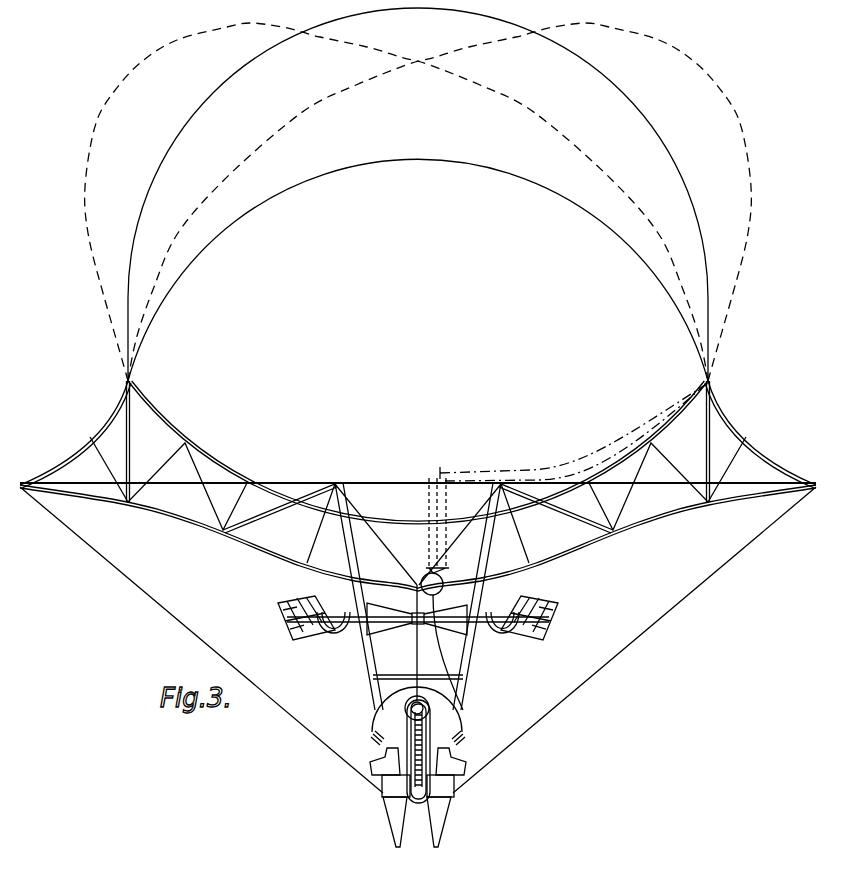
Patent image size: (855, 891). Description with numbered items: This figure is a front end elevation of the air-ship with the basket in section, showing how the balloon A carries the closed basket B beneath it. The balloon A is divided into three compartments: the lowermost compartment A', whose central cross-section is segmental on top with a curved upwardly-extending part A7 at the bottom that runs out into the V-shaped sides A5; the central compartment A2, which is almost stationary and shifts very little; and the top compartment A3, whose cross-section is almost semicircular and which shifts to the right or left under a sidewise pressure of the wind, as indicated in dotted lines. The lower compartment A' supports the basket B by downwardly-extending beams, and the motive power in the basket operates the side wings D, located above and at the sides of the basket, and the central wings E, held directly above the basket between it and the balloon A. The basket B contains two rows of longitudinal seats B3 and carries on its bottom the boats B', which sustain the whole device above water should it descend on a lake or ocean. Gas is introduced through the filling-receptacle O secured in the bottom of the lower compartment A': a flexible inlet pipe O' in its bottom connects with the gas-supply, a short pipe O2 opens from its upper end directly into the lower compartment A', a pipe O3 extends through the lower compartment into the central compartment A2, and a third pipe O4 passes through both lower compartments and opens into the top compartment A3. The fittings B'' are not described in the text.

The balloon A is at (439, 194).
The central compartment A2 is at (418, 272).
The top compartment A3 is at (418, 202).
The sides of lower compartment A5 is at (73, 461).
The curved upwardly-extending part A7 is at (118, 503).
The lower compartment A' is at (418, 587).
The filling-receptacle O is at (447, 577).
The flexible inlet pipe O' is at (448, 652).
The short pipe O2 is at (418, 568).
The pipe to central compartment O3 is at (425, 500).
The pipe to top compartment O4 is at (582, 461).
The central wings E is at (416, 615).
The side wings D is at (293, 617).
The basket B is at (412, 728).
The boats B' is at (415, 816).
The cylinder fittings B'' is at (424, 737).
The longitudinal seats B3 is at (400, 733).